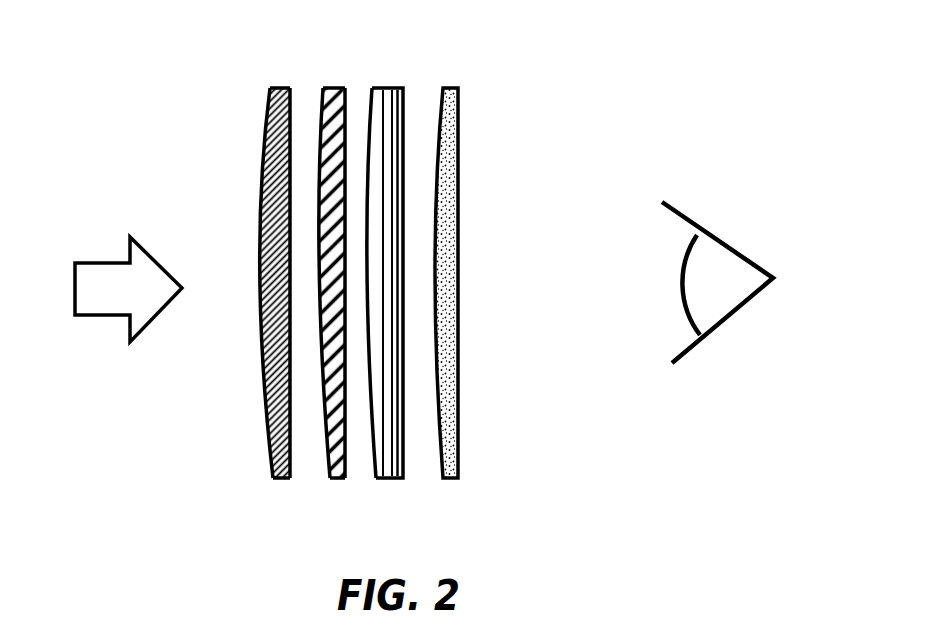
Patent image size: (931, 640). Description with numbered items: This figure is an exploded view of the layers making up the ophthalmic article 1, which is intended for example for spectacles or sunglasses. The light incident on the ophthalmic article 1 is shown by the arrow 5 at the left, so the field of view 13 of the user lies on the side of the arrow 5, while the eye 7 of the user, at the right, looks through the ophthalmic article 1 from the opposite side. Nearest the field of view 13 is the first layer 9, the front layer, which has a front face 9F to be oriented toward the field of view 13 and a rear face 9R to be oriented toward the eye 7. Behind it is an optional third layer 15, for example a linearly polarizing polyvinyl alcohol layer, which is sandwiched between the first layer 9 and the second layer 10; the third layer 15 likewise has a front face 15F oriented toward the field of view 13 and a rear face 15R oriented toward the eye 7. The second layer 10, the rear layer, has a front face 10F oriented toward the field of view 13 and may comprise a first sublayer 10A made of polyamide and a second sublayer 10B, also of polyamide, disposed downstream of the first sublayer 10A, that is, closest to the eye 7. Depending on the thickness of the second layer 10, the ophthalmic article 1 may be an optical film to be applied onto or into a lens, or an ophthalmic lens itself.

The ophthalmic article 1 is at (563, 122).
The arrow 5 is at (105, 270).
The eye 7 is at (760, 292).
The first layer 9 is at (244, 294).
The front face of the first layer 9F is at (263, 423).
The rear face of the first layer 9R is at (290, 476).
The second layer 10 is at (512, 286).
The first sublayer 10A is at (458, 394).
The second sublayer 10B is at (448, 88).
The front face of the second layer 10F is at (373, 450).
The field of view 13 is at (150, 134).
The third layer 15 is at (375, 243).
The front face of the third layer 15F is at (328, 100).
The rear face of the third layer 15R is at (347, 107).